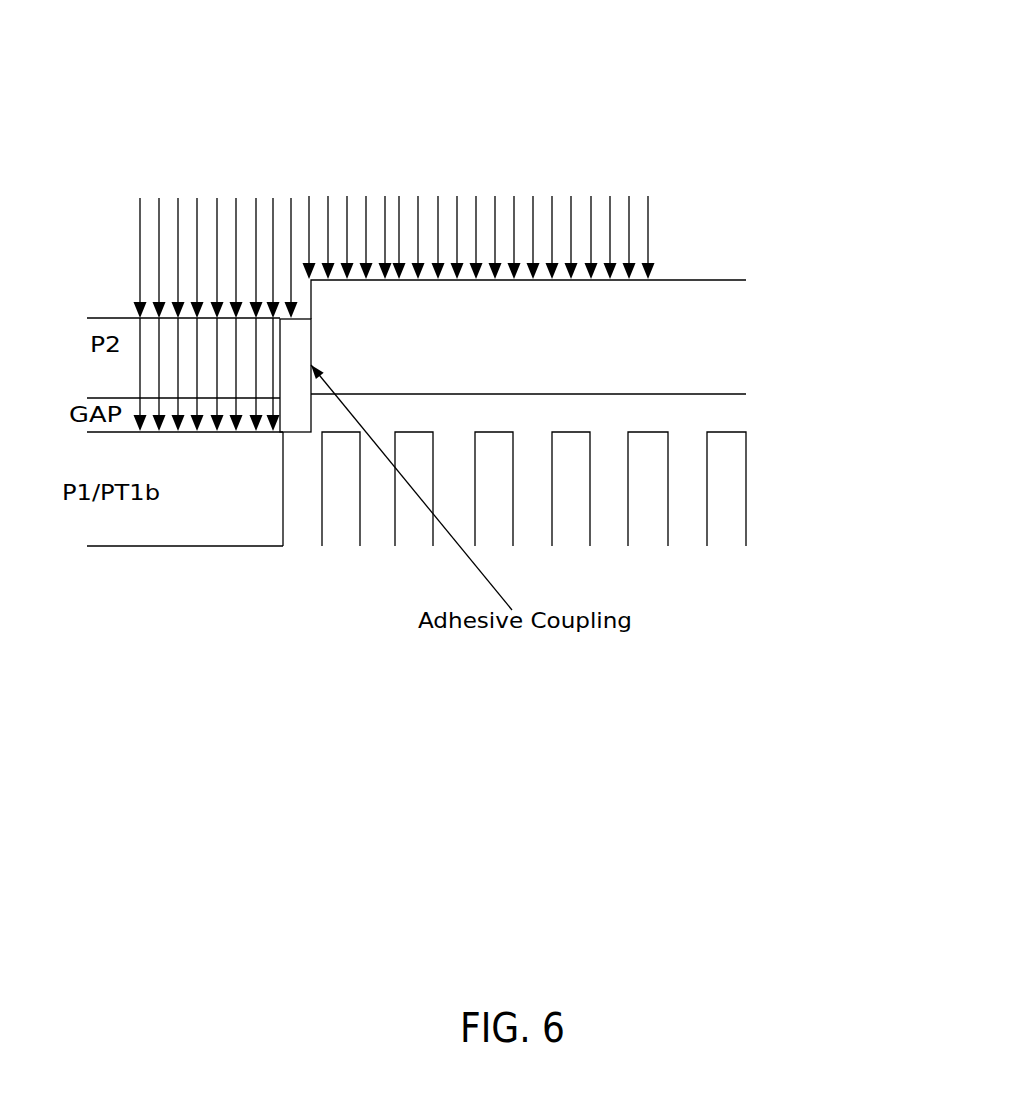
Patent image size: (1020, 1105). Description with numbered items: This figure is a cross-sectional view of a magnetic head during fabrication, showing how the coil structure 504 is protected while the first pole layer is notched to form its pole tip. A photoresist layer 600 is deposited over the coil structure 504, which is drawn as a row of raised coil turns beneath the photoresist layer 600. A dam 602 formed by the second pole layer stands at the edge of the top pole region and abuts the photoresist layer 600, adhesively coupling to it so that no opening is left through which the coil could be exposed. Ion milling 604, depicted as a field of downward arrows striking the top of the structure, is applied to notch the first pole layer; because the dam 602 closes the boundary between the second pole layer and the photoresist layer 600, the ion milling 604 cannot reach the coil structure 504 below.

The photoresist layer 600 is at (745, 270).
The dam 602 is at (299, 418).
The ion milling 604 is at (573, 173).
The coil structure 504 is at (717, 577).